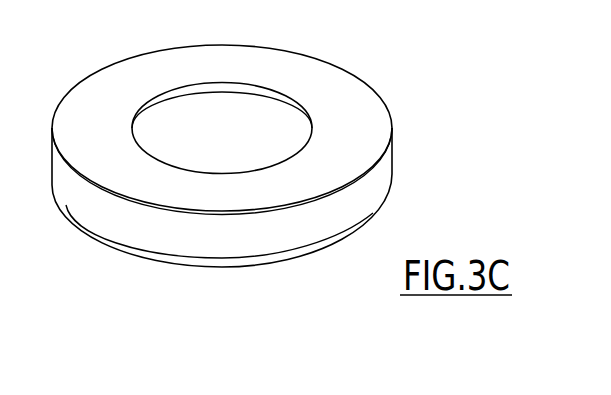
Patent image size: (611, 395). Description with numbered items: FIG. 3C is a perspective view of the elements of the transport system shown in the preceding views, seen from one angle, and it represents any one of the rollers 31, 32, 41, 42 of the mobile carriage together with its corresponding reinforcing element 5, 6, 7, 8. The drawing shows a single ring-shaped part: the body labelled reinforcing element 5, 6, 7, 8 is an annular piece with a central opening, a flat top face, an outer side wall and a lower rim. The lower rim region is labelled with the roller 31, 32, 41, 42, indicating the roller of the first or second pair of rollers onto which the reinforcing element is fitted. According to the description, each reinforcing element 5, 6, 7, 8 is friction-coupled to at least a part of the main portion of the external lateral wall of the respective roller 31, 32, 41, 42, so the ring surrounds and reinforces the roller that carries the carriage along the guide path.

The reinforcing element 5 is at (313, 130).
The reinforcing element 6 is at (313, 130).
The reinforcing element 7 is at (313, 130).
The reinforcing element 8 is at (369, 131).
The roller 31 is at (272, 268).
The roller 32 is at (272, 268).
The roller 41 is at (272, 268).
The roller 42 is at (286, 263).